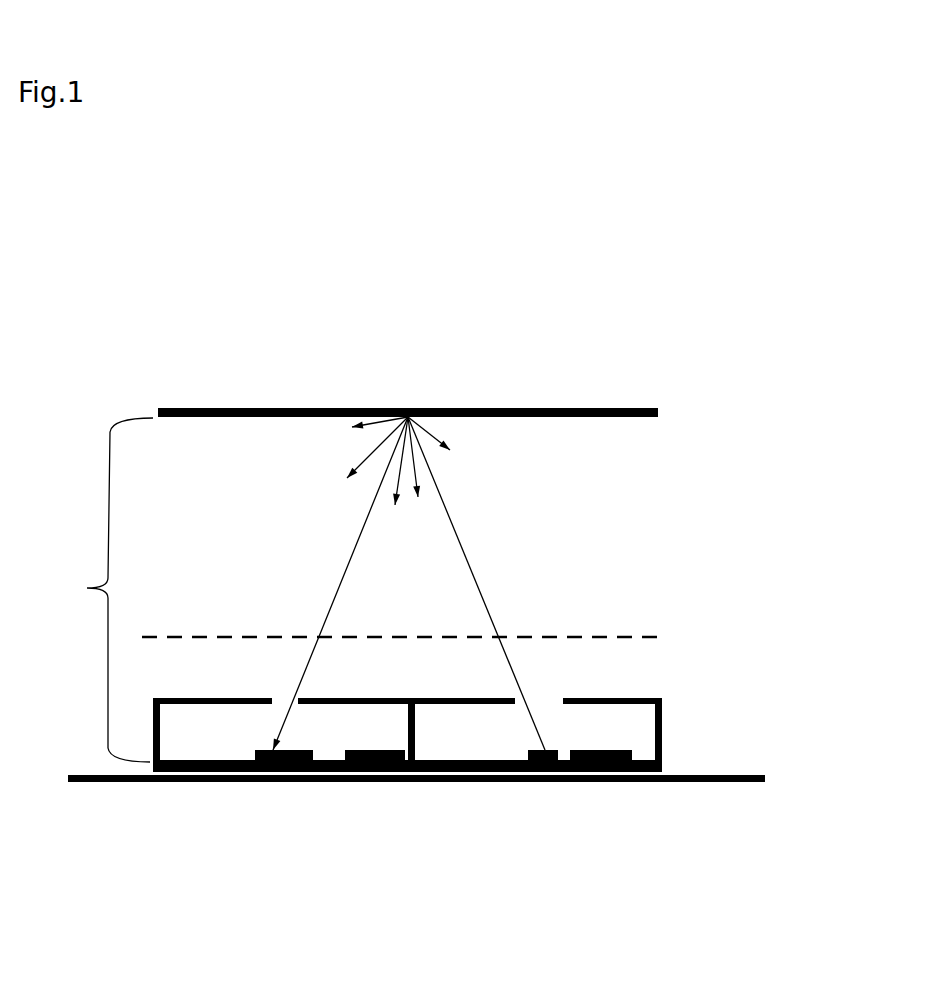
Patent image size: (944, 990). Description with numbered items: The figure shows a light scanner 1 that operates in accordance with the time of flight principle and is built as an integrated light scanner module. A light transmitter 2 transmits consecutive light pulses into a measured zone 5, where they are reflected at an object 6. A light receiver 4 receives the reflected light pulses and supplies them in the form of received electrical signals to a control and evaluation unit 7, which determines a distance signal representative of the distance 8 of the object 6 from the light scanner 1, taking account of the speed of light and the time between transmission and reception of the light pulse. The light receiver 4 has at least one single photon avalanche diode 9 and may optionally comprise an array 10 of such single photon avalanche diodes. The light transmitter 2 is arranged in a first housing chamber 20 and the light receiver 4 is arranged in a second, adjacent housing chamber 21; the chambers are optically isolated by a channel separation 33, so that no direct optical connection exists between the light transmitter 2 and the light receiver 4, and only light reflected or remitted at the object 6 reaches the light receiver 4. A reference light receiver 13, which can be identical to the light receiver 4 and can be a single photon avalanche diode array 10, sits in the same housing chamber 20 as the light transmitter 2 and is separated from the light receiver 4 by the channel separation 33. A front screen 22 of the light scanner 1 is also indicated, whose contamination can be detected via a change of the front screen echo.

The light scanner 1 is at (520, 883).
The light transmitter 2 is at (557, 748).
The light receiver 4 is at (303, 752).
The measured zone 5 is at (263, 317).
The object 6 is at (577, 408).
The control and evaluation unit 7 is at (358, 747).
The distance 8 is at (87, 589).
The single photon avalanche diode 9 is at (267, 750).
The single photon avalanche diode array 10 is at (290, 750).
The reference light receiver 13 is at (593, 750).
The first housing chamber 20 is at (630, 683).
The second housing chamber 21 is at (198, 680).
The front screen 22 is at (602, 637).
The channel separation 33 is at (415, 742).